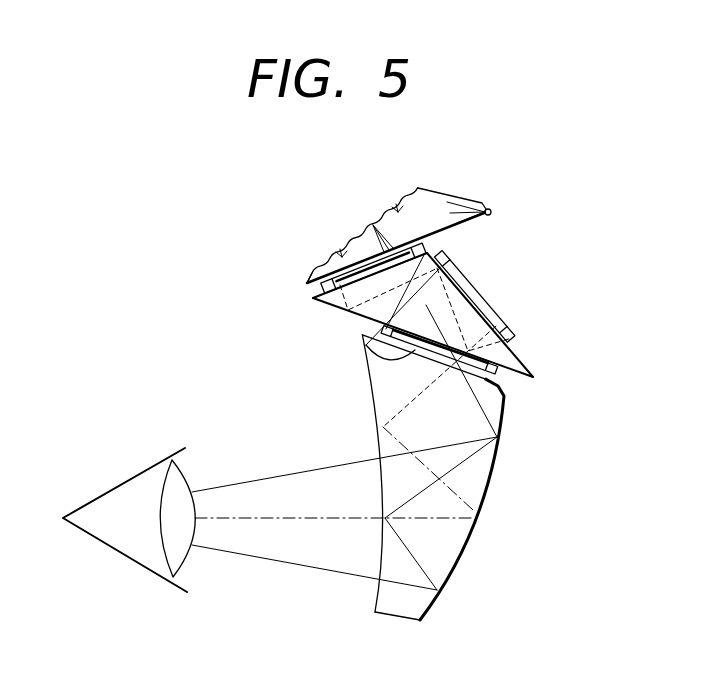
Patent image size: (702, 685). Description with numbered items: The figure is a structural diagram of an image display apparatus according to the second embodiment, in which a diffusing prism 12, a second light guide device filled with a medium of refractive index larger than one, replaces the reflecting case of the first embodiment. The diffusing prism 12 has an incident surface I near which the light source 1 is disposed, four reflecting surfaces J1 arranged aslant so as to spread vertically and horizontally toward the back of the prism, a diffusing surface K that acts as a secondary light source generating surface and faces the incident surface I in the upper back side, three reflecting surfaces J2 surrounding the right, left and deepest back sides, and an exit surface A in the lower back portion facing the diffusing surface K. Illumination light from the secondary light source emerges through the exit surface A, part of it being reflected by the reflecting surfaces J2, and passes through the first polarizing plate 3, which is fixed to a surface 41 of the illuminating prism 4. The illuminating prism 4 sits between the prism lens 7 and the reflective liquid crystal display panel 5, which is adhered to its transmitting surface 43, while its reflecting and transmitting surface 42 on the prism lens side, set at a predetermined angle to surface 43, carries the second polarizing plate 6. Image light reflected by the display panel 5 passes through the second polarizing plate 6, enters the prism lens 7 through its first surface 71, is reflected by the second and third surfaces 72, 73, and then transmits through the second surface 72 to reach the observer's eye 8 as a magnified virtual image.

The diffusing prism 12 is at (433, 177).
The light source 1 is at (491, 213).
The incident surface I is at (490, 209).
The reflecting surfaces J1 is at (452, 196).
The reflecting surfaces J2 is at (306, 277).
The exit surface A is at (341, 255).
The diffusing surface K is at (396, 209).
The first polarizing plate 3 is at (325, 291).
The illuminating prism 4 is at (520, 357).
The surface 41 is at (318, 303).
The reflecting and transmitting surface 42 is at (340, 310).
The transmitting surface 43 is at (528, 374).
The reflective liquid crystal display panel 5 is at (511, 311).
The second polarizing plate 6 is at (500, 371).
The prism lens 7 is at (486, 487).
The first surface 71 is at (390, 362).
The second surface 72 is at (381, 477).
The third surface 73 is at (459, 550).
The observer's eye 8 is at (108, 546).